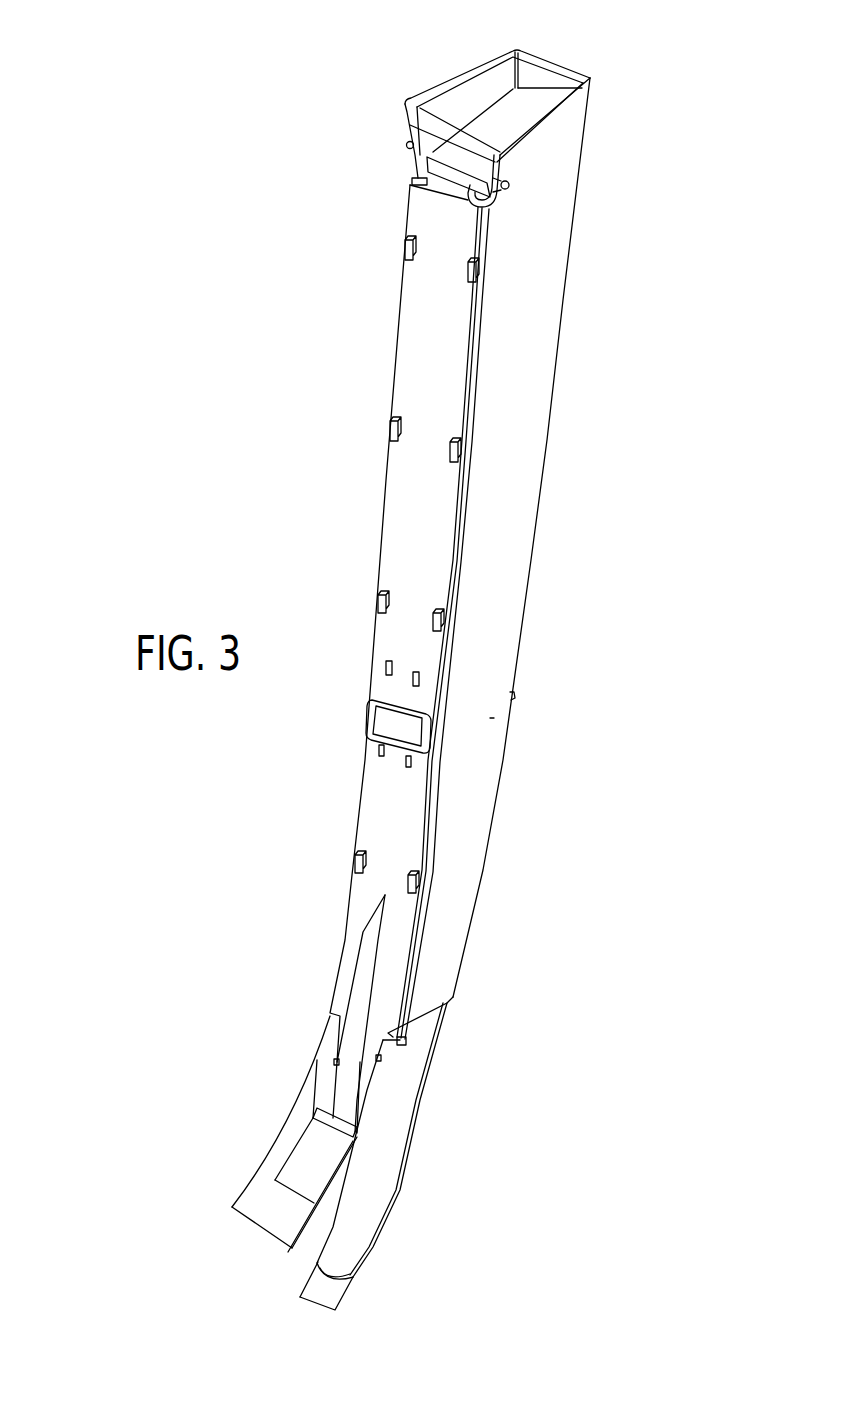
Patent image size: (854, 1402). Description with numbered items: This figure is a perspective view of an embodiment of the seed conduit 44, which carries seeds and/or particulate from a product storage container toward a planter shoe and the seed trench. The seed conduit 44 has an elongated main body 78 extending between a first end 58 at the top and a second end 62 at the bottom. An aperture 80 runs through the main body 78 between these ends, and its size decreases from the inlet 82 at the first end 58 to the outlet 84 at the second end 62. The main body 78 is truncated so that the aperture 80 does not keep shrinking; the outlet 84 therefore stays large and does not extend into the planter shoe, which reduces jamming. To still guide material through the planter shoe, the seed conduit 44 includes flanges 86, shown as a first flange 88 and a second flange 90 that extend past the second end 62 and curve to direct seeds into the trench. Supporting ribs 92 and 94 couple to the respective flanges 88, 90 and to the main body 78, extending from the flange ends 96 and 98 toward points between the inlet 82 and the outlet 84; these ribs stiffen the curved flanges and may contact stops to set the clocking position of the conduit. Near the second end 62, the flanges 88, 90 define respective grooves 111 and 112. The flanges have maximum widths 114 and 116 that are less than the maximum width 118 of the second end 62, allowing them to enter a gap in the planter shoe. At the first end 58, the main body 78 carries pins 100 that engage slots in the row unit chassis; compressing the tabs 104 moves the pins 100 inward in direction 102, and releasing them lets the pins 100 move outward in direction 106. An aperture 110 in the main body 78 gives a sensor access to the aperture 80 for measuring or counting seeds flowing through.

The seed conduit 44 is at (710, 268).
The first end 58 is at (348, 116).
The second end 62 is at (106, 849).
The main body 78 is at (288, 441).
The aperture 80 is at (490, 718).
The inlet 82 is at (497, 116).
The outlet 84 is at (433, 1014).
The flanges 86 is at (103, 1051).
The first flange 88 is at (322, 1108).
The second flange 90 is at (358, 1225).
The supporting rib 92 is at (358, 997).
The supporting rib 94 is at (400, 1163).
The end of first flange 96 is at (337, 1142).
The end of second flange 98 is at (328, 1282).
The pins 100 is at (406, 147).
The inward direction 102 is at (413, 77).
The tabs 104 is at (403, 108).
The outward direction 106 is at (434, 36).
The aperture 110 is at (372, 708).
The groove 111 is at (335, 1043).
The groove 112 is at (325, 952).
The maximum width of first flange 114 is at (290, 1197).
The maximum width of second flange 116 is at (318, 1300).
The maximum width of second end 118 is at (263, 1228).